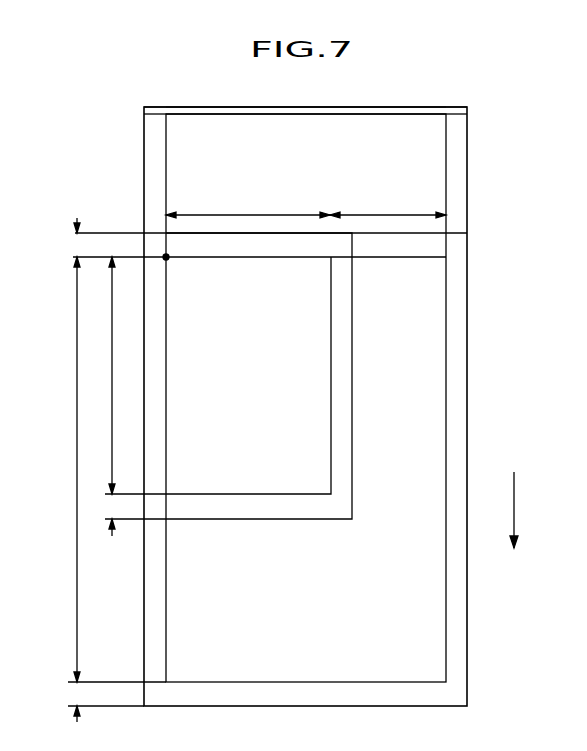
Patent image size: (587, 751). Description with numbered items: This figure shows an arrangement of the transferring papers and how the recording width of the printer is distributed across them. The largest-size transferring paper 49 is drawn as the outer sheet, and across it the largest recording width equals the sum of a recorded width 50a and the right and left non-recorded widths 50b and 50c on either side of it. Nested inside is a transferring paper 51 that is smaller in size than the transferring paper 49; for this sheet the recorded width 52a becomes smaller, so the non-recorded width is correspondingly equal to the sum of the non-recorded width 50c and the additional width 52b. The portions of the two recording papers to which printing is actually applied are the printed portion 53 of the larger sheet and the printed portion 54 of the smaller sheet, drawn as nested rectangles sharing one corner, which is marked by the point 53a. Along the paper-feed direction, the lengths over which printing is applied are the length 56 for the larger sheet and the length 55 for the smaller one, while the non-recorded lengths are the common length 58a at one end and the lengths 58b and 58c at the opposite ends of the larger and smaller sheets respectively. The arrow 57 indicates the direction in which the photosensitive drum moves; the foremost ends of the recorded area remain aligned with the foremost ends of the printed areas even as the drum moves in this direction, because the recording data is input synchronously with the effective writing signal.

The largest-size transferring paper 49 is at (467, 368).
The recorded width 50a is at (318, 109).
The non-recorded width 50b is at (157, 110).
The non-recorded width 50c is at (457, 111).
The transferring paper 51 is at (352, 370).
The recorded width 52a is at (290, 215).
The width 52b is at (380, 215).
The printed portion 53 is at (447, 432).
The reference corner point 53a is at (164, 256).
The printed portion 54 is at (331, 426).
The printed length 55 is at (112, 373).
The printed length 56 is at (77, 333).
The direction 57 is at (516, 503).
The non-recorded length 58a is at (78, 245).
The non-recorded length 58b is at (78, 694).
The non-recorded length 58c is at (110, 505).